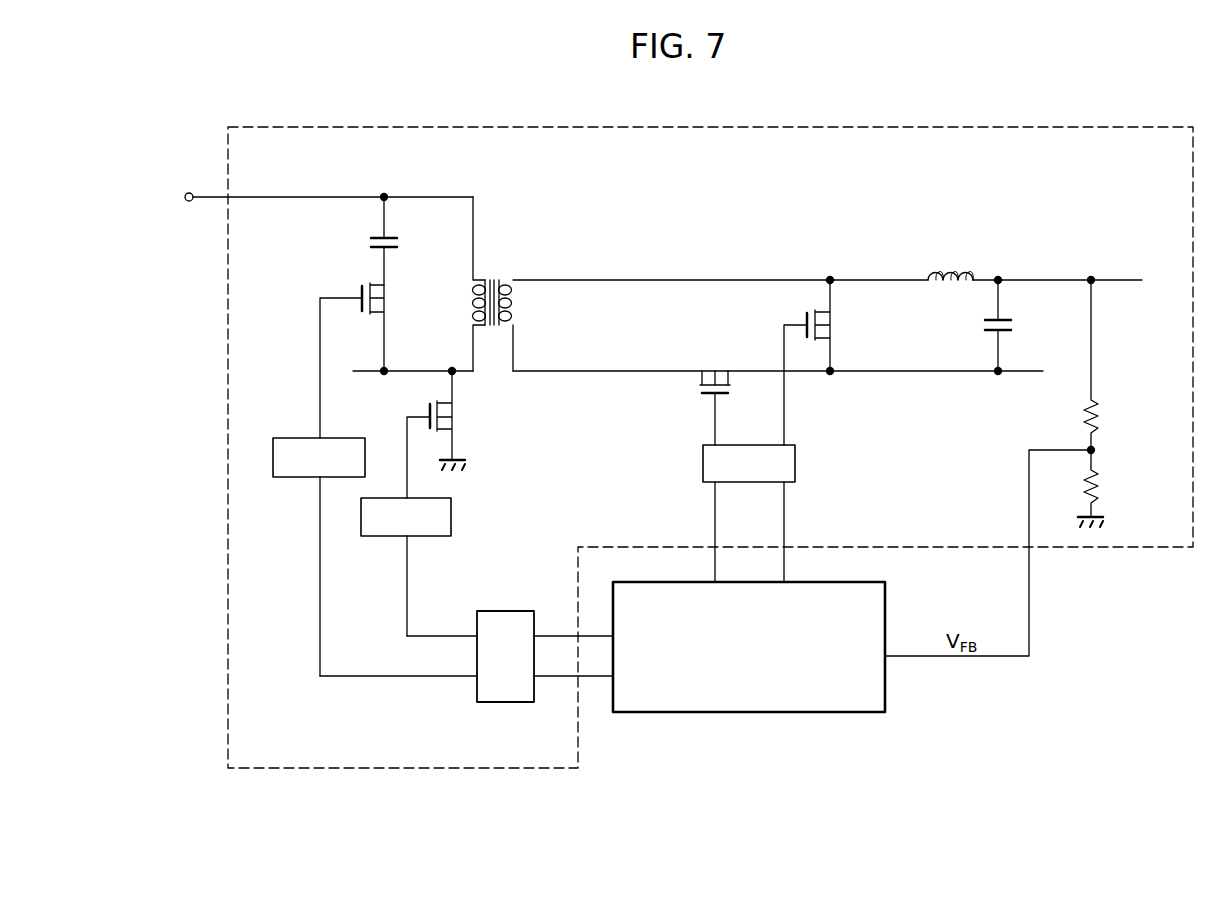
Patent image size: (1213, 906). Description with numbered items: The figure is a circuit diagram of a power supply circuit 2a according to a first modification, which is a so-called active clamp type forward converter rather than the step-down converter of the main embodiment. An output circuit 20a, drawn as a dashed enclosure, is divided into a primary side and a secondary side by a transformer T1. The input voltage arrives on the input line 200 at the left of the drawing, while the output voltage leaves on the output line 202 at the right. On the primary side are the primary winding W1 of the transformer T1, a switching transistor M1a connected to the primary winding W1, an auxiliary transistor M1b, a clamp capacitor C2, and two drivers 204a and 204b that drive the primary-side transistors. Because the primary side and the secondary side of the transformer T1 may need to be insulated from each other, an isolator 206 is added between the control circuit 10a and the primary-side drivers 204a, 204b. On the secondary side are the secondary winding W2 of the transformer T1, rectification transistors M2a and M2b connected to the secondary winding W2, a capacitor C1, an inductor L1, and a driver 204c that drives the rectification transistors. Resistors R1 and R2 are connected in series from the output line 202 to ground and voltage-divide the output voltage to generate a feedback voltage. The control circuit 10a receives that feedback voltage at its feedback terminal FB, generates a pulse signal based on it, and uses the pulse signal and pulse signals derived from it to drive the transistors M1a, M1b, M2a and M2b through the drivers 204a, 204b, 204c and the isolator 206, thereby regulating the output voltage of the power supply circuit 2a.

The power supply circuit 2a is at (684, 840).
The control circuit 10a is at (733, 713).
The output circuit 20a is at (808, 127).
The input terminal line 200 is at (275, 197).
The output terminal line 202 is at (1115, 278).
The driver 204a is at (333, 437).
The driver 204b is at (453, 515).
The driver 204c is at (797, 460).
The isolator 206 is at (498, 703).
The capacitor C1 is at (1015, 326).
The clamp capacitor C2 is at (403, 243).
The inductor L1 is at (949, 272).
The switching transistor M1a is at (458, 414).
The auxiliary transistor M1b is at (390, 296).
The rectification transistor M2a is at (836, 323).
The rectification transistor M2b is at (700, 390).
The resistor R1 is at (1103, 417).
The resistor R2 is at (1103, 485).
The transformer T1 is at (701, 277).
The primary winding W1 is at (480, 275).
The secondary winding W2 is at (500, 278).